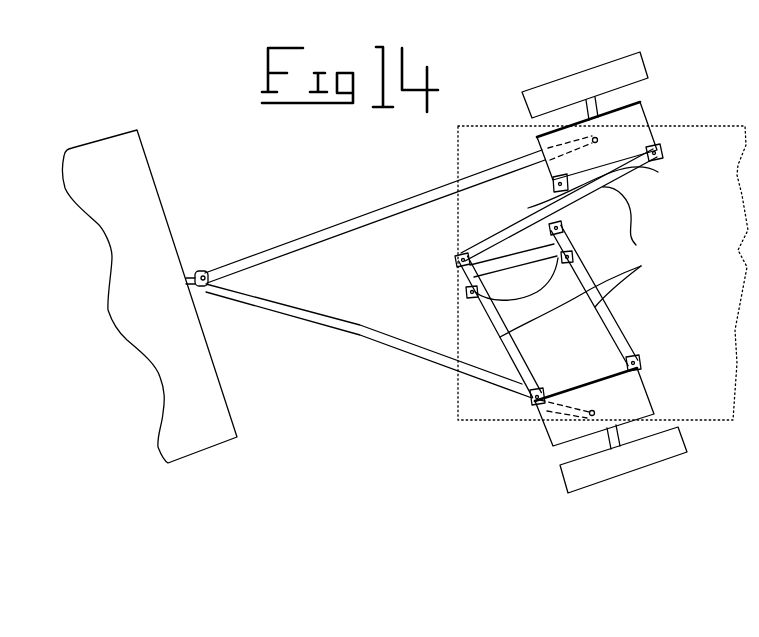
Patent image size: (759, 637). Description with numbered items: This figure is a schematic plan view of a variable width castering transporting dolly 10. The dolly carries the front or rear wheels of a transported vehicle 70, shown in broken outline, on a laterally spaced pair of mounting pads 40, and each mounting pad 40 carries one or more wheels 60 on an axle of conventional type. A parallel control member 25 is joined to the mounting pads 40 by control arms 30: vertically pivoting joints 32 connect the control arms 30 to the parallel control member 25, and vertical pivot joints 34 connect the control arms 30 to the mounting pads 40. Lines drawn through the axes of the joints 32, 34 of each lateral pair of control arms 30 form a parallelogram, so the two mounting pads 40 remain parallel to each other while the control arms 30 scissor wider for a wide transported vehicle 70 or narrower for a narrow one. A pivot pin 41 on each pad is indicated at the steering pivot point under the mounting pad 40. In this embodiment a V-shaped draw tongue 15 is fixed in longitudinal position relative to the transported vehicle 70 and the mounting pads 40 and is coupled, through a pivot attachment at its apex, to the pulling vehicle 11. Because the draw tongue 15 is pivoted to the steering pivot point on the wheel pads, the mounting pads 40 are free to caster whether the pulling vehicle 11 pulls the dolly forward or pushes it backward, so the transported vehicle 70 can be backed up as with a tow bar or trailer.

The wheel suspension assembly 10 is at (441, 270).
The pulling vehicle 11 is at (206, 350).
The v draw tongue 15 is at (315, 313).
The parallel control member 25 is at (553, 255).
The control arms 30 is at (563, 196).
The vertically pivoting joints 32 is at (560, 234).
The vertical pivot joints 34 is at (656, 155).
The mounting pads 40 is at (648, 114).
The pivot pin 41 is at (598, 140).
The wheels 60 is at (631, 63).
The transported vehicle 70 is at (458, 406).